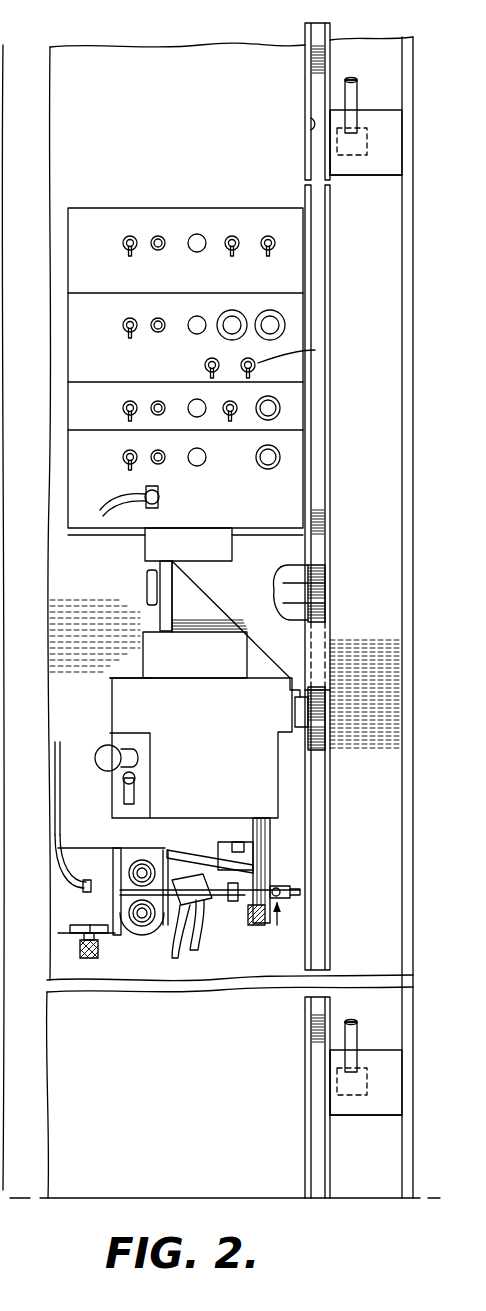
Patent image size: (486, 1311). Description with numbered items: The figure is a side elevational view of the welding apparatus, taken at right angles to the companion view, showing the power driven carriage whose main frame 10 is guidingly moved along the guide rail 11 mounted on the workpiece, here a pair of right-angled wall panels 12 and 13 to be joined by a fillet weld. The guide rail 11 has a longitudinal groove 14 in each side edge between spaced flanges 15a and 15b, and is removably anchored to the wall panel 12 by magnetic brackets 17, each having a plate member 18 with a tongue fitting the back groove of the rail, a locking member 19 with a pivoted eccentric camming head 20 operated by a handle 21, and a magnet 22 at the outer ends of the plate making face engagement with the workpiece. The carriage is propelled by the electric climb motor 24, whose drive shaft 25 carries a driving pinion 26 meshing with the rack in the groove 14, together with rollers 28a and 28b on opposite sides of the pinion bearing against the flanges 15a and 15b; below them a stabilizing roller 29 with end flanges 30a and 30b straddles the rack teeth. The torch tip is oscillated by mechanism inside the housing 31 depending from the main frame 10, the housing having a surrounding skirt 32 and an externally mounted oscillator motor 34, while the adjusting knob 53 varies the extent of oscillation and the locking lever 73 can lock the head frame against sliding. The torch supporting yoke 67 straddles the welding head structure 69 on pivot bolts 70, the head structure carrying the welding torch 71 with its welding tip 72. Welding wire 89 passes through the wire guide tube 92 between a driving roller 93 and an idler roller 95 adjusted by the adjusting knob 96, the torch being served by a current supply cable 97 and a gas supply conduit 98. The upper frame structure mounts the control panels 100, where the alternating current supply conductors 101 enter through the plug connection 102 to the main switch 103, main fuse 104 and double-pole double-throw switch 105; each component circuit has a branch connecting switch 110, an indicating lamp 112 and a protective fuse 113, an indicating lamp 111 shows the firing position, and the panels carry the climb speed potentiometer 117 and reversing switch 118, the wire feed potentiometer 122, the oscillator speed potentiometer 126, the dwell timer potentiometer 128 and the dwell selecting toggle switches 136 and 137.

The main frame 10 is at (300, 635).
The guide rail 11 is at (303, 27).
The wall panel 12 is at (405, 73).
The wall panel 13 is at (160, 134).
The groove 14 is at (311, 124).
The flange 15a is at (305, 65).
The flange 15b is at (327, 92).
The magnetic bracket 17 is at (372, 177).
The plate member 18 is at (333, 148).
The locking member 19 is at (356, 78).
The eccentric camming head 20 is at (367, 135).
The handle 21 is at (355, 100).
The magnet 22 is at (393, 153).
The electric motor 24 is at (163, 576).
The drive shaft 25 is at (288, 582).
The driving pinion 26 is at (325, 580).
The roller 28a is at (308, 593).
The roller 28b is at (327, 601).
The stabilizing roller 29 is at (322, 707).
The end flange 30a is at (298, 703).
The end flange 30b is at (327, 713).
The housing 31 is at (108, 683).
The skirt 32 is at (235, 768).
The oscillator motor 34 is at (150, 609).
The adjusting knob 53 is at (106, 748).
The torch supporting yoke 67 is at (272, 841).
The welding head structure 69 is at (158, 848).
The pivot bolt 70 is at (262, 926).
The welding torch 71 is at (278, 926).
The welding tip 72 is at (300, 896).
The locking lever 73 is at (124, 795).
The welding wire 89 is at (57, 802).
The wire guide tube 92 is at (58, 868).
The driving roller 93 is at (137, 864).
The idler roller 95 is at (148, 938).
The adjusting knob 96 is at (92, 960).
The supply cable 97 is at (195, 955).
The supply conduit 98 is at (175, 960).
The control panels 100 is at (80, 348).
The alternating current supply conductors 101 is at (98, 514).
The plug connection 102 is at (165, 500).
The main switch 103 is at (126, 237).
The main fuse 104 is at (199, 234).
The double-pole double-throw switch 105 is at (271, 236).
The double-throw branch connecting switch 110 is at (122, 325).
The indicating lamp 111 is at (166, 226).
The indicating lamp 112 is at (153, 333).
The protective fuse 113 is at (205, 318).
The adjusting potentiometer 117 is at (288, 385).
The reversing switch 118 is at (243, 398).
The adjusting potentiometer 122 is at (260, 452).
The adjusting potentiometer 126 is at (290, 294).
The adjusting potentiometer 128 is at (237, 311).
The toggle switch 136 is at (300, 350).
The toggle switch 137 is at (206, 359).